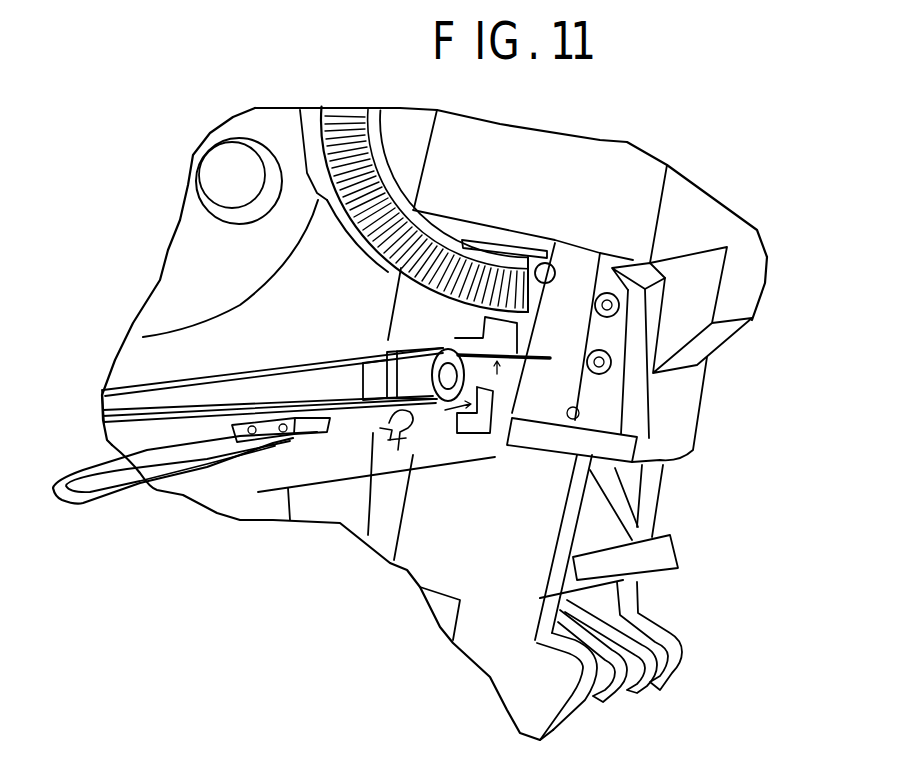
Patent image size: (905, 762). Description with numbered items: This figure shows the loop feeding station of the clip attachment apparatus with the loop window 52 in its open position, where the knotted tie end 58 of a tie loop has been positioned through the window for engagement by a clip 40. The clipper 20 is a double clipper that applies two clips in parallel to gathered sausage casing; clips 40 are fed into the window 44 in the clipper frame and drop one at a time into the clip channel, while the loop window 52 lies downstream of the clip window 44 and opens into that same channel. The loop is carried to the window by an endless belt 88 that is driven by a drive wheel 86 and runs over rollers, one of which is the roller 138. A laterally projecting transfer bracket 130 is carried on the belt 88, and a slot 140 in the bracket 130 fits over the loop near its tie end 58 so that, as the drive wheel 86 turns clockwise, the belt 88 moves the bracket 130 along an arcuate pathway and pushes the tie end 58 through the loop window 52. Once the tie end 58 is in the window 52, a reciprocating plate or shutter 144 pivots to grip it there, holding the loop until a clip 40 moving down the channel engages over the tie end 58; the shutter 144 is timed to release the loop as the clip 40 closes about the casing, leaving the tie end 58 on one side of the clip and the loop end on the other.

The clipper 20 is at (692, 403).
The clip 40 is at (482, 260).
The window 44 is at (547, 250).
The loop window 52 is at (477, 413).
The tie end 58 is at (398, 428).
The drive wheel 86 is at (243, 268).
The endless belt 88 is at (172, 382).
The transfer bracket 130 is at (318, 433).
The roller 138 is at (440, 347).
The slot 140 is at (388, 420).
The shutter 144 is at (520, 350).